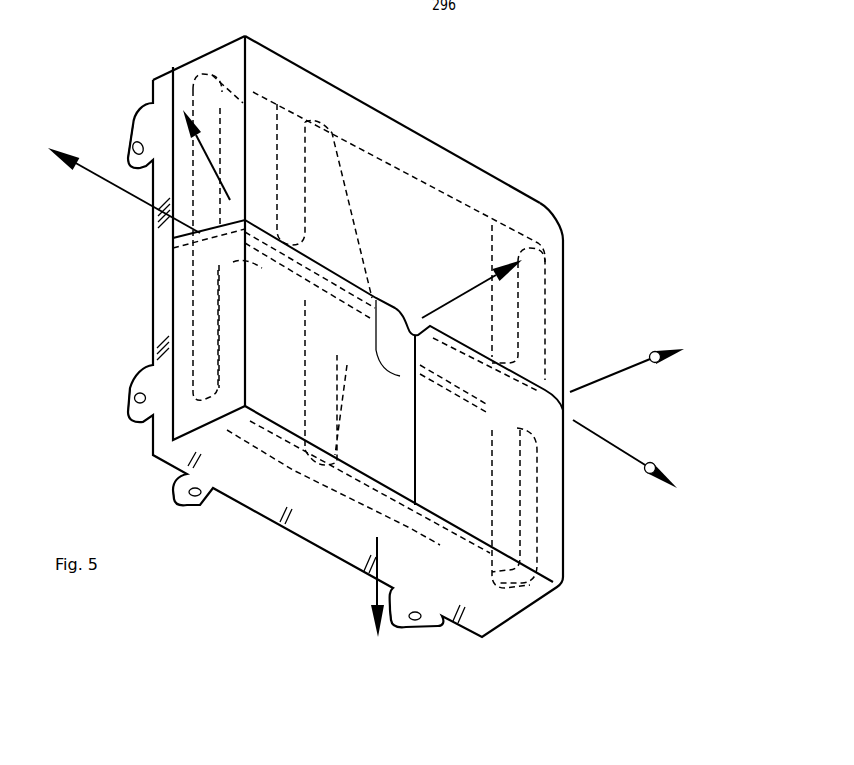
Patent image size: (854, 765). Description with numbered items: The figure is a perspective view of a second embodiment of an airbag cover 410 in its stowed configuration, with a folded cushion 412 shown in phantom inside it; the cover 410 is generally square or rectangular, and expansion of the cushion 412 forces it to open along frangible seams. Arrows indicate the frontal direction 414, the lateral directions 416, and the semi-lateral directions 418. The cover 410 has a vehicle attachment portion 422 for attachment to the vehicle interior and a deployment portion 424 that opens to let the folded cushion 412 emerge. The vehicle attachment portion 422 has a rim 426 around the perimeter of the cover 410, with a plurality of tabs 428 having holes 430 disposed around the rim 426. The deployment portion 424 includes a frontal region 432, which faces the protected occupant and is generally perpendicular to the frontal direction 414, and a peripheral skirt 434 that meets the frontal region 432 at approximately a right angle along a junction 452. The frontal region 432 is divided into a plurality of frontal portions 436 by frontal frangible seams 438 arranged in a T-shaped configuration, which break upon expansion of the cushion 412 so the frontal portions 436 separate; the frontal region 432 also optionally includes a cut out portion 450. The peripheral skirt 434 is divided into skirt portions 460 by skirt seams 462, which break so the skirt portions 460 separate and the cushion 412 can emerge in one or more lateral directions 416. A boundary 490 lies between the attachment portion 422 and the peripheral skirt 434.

The airbag cover 410 is at (93, 64).
The folded cushion 412 is at (485, 213).
The frontal direction 414 is at (448, 300).
The lateral directions 416 is at (90, 173).
The semi-lateral directions 418 is at (670, 388).
The vehicle attachment portion 422 is at (162, 72).
The deployment portion 424 is at (200, 57).
The rim 426 is at (155, 102).
The tabs 428 is at (133, 133).
The holes 430 is at (132, 147).
The frontal region 432 is at (437, 153).
The peripheral skirt 434 is at (194, 288).
The frontal portions 436 is at (563, 240).
The frontal frangible seams 438 is at (415, 378).
The cut out portion 450 is at (410, 308).
The junction 452 is at (250, 156).
The skirt portions 460 is at (182, 233).
The skirt seams 462 is at (246, 262).
The boundary 490 is at (262, 492).